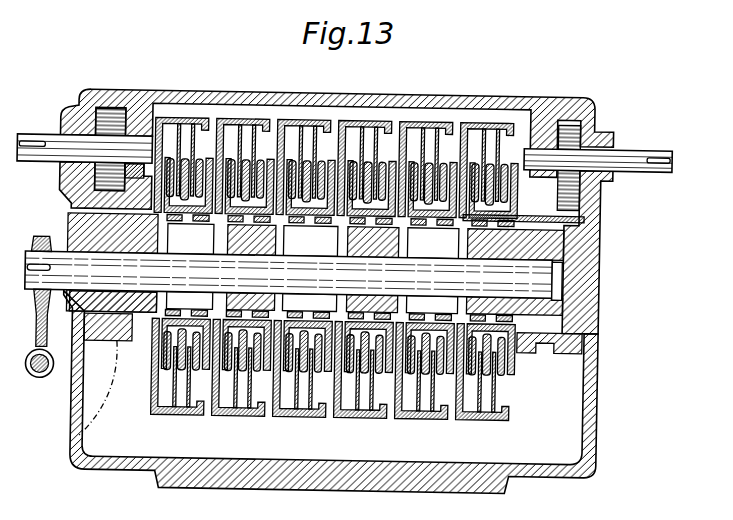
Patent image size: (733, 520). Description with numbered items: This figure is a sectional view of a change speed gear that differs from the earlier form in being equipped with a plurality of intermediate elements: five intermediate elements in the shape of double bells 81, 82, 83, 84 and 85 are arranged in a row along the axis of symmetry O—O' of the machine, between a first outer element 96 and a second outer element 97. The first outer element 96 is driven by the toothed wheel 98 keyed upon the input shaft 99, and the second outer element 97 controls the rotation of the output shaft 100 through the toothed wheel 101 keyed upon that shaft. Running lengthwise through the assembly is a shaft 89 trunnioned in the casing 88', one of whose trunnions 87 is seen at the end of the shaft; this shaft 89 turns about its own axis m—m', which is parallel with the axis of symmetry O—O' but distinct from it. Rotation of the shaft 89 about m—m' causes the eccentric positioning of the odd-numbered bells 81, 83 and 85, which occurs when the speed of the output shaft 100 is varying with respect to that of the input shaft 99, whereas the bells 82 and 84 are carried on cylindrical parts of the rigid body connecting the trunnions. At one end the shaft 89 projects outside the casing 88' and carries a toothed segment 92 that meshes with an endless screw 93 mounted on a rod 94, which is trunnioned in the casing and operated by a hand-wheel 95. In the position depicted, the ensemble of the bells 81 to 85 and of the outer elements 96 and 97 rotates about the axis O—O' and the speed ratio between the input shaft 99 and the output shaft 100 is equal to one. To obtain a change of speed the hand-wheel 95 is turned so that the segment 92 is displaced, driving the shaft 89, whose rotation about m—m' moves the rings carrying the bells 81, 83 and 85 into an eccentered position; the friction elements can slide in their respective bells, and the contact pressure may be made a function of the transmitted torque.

The double bell 81 is at (480, 115).
The double bell 82 is at (425, 116).
The double bell 83 is at (360, 117).
The double bell 84 is at (305, 118).
The double bell 85 is at (230, 120).
The outer element 97 is at (175, 121).
The trunnion 87 is at (575, 241).
The casing 88' is at (133, 112).
The shaft 89 is at (556, 295).
The toothed segment 92 is at (35, 336).
The endless screw 93 is at (52, 386).
The rod 94 is at (28, 386).
The hand-wheel 95 is at (66, 445).
The outer element 96 is at (583, 218).
The toothed wheel 98 is at (581, 118).
The input shaft 99 is at (635, 150).
The output shaft 100 is at (28, 140).
The toothed wheel 101 is at (80, 102).
The axis of symmetry O—O' O is at (282, 268).
The axis m—m' m is at (19, 275).
The axis of symmetry O— O' is at (636, 264).
The axis m— m' is at (609, 291).